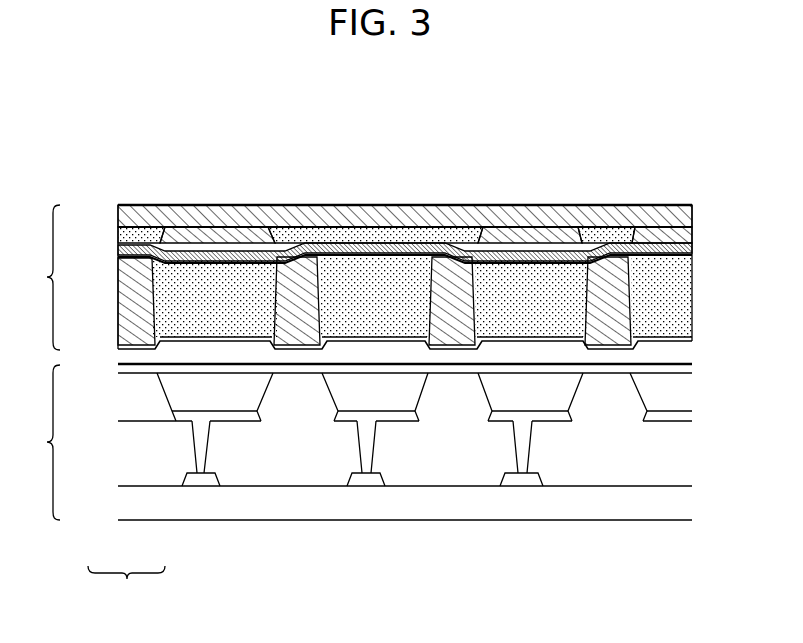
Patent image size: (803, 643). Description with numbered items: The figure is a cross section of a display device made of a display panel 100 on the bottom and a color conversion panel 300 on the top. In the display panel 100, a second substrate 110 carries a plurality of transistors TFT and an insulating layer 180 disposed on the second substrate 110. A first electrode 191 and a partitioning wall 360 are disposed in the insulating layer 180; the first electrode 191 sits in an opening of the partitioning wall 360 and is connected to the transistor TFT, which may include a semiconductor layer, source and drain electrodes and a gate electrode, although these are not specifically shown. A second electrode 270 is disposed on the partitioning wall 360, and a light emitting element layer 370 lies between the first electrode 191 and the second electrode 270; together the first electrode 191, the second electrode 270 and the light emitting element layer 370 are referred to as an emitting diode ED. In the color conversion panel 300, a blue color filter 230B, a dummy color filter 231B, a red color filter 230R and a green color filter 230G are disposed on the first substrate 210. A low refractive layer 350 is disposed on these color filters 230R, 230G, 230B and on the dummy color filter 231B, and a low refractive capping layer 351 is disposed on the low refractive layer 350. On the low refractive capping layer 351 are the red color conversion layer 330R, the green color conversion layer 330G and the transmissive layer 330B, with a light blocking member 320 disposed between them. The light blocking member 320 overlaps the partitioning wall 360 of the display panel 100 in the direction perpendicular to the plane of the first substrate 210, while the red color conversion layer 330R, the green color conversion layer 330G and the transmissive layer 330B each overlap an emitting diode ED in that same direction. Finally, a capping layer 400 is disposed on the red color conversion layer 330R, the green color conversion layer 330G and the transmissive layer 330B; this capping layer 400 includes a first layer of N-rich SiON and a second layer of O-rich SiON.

The color conversion panel 300 is at (352, 277).
The first substrate 210 is at (300, 215).
The dummy color filter 231B is at (143, 232).
The green color filter 230G is at (195, 232).
The blue color filter 230B is at (348, 233).
The red color filter 230R is at (495, 233).
The green color conversion layer 330G is at (233, 270).
The transmissive layer 330B is at (398, 270).
The red color conversion layer 330R is at (540, 270).
The low refractive layer 350 is at (693, 247).
The low refractive capping layer 351 is at (693, 258).
The light blocking member 320 is at (123, 300).
The capping layer 400 is at (682, 339).
The display panel 100 is at (36, 442).
The second electrode 270 is at (120, 373).
The light emitting element layer 370 is at (165, 392).
The partitioning wall 360 is at (297, 410).
The first electrode 191 is at (177, 417).
The transistor TFT is at (206, 482).
The insulating layer 180 is at (637, 460).
The second substrate 110 is at (437, 505).
The emitting diode ED is at (126, 585).